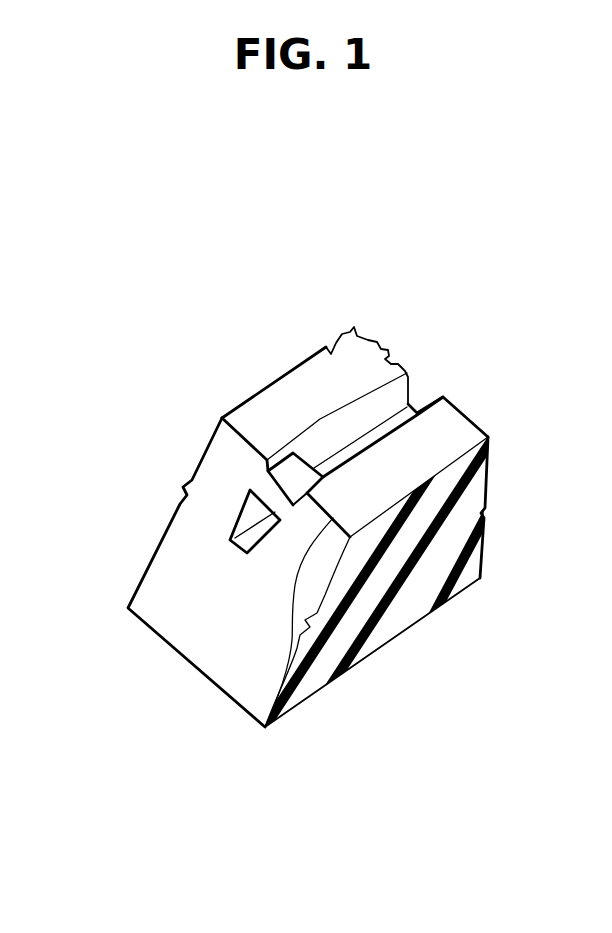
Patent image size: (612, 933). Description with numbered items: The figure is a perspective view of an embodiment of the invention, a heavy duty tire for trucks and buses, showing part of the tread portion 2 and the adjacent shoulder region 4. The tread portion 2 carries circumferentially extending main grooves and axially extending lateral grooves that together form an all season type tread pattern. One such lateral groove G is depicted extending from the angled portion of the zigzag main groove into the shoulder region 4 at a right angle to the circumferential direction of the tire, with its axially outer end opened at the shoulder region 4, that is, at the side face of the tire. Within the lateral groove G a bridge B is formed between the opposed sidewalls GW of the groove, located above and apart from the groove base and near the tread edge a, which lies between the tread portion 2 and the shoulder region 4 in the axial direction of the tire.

The tread portion 2 is at (353, 327).
The shoulder region 4 is at (183, 547).
The lateral groove G is at (317, 428).
The opposed sidewalls of the lateral groove GW is at (354, 400).
The bridge B is at (256, 487).
The tread edge a is at (290, 612).